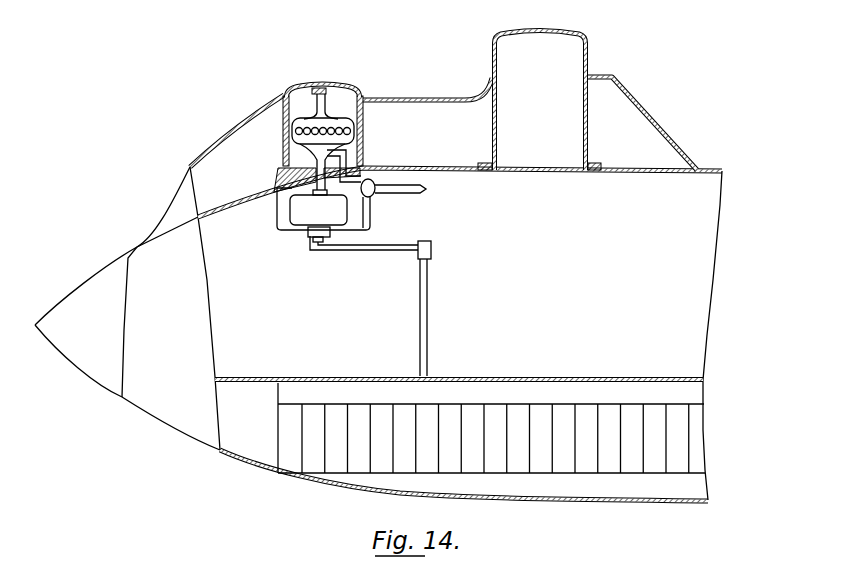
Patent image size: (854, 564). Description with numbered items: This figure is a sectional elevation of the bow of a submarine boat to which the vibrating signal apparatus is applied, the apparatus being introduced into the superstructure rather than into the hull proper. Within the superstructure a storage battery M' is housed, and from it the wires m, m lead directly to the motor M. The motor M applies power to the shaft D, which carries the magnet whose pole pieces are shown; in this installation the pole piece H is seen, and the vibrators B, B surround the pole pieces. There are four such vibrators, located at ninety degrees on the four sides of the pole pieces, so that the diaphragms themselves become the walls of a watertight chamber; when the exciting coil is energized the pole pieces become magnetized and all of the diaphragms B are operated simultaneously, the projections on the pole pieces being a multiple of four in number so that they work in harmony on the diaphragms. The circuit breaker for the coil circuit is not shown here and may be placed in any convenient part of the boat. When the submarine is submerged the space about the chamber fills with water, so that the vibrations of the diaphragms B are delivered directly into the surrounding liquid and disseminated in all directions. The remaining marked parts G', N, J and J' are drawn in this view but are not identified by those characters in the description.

The vibrators B is at (283, 127).
The pole piece H is at (283, 155).
The governor/gear G' is at (340, 130).
The ventilator tower N is at (481, 117).
The shaft D is at (300, 193).
The motor M is at (318, 218).
The pipe nozzle J is at (387, 186).
The valve J' is at (397, 186).
The wires m is at (448, 404).
The storage battery M' is at (491, 467).